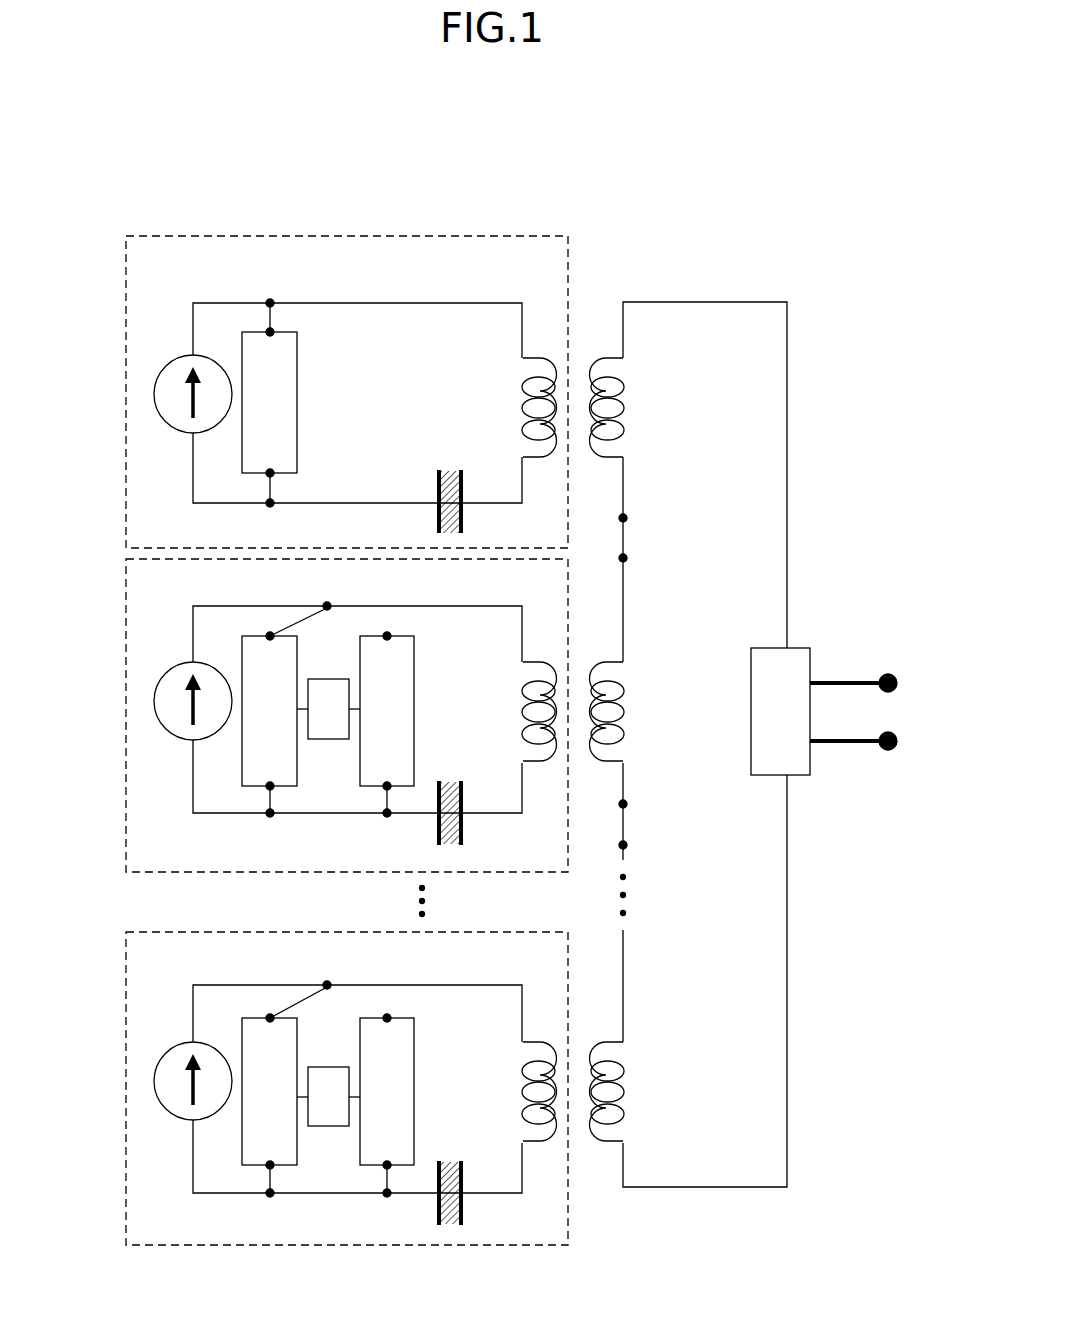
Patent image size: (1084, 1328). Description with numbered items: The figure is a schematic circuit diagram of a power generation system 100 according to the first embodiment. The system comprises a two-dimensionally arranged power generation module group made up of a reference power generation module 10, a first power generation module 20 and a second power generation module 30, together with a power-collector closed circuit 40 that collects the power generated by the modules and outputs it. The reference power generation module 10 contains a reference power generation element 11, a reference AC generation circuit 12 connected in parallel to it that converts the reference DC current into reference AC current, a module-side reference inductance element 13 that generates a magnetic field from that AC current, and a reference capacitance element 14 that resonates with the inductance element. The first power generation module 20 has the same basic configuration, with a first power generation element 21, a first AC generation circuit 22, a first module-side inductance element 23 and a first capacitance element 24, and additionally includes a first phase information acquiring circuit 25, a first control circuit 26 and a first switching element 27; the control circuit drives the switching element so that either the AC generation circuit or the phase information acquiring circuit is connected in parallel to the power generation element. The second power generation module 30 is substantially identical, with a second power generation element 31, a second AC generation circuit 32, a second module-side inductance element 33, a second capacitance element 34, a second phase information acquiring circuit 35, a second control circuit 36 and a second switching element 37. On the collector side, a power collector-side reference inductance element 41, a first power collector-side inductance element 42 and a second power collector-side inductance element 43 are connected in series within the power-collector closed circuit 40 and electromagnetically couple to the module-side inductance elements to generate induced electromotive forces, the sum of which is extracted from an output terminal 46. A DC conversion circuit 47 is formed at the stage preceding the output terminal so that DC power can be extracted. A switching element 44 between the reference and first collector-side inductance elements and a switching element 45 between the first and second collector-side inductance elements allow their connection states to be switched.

The power generation system 100 is at (836, 186).
The reference power generation module 10 is at (126, 326).
The reference power generation element 11 is at (154, 399).
The reference AC generation circuit 12 is at (269, 403).
The module-side reference inductance element 13 is at (518, 412).
The reference capacitance element 14 is at (463, 490).
The first power generation module 20 is at (126, 633).
The first power generation element 21 is at (154, 706).
The first AC generation circuit 22 is at (269, 724).
The first module-side inductance element 23 is at (518, 718).
The first capacitance element 24 is at (463, 800).
The first phase information acquiring circuit 25 is at (387, 724).
The first control circuit 26 is at (328, 709).
The first switching element 27 is at (295, 618).
The second power generation module 30 is at (126, 1023).
The second power generation element 31 is at (154, 1096).
The second AC generation circuit 32 is at (269, 1105).
The second module-side inductance element 33 is at (518, 1112).
The second capacitance element 34 is at (463, 1180).
The second phase information acquiring circuit 35 is at (387, 1105).
The second control circuit 36 is at (328, 1096).
The second switching element 37 is at (295, 1000).
The power-collector closed circuit 40 is at (788, 600).
The power collector-side reference inductance element 41 is at (645, 408).
The first power collector-side inductance element 42 is at (637, 716).
The second power collector-side inductance element 43 is at (635, 1103).
The switching element 44 is at (623, 538).
The switching element 45 is at (626, 822).
The output terminal 46 is at (910, 655).
The DC conversion circuit 47 is at (805, 765).